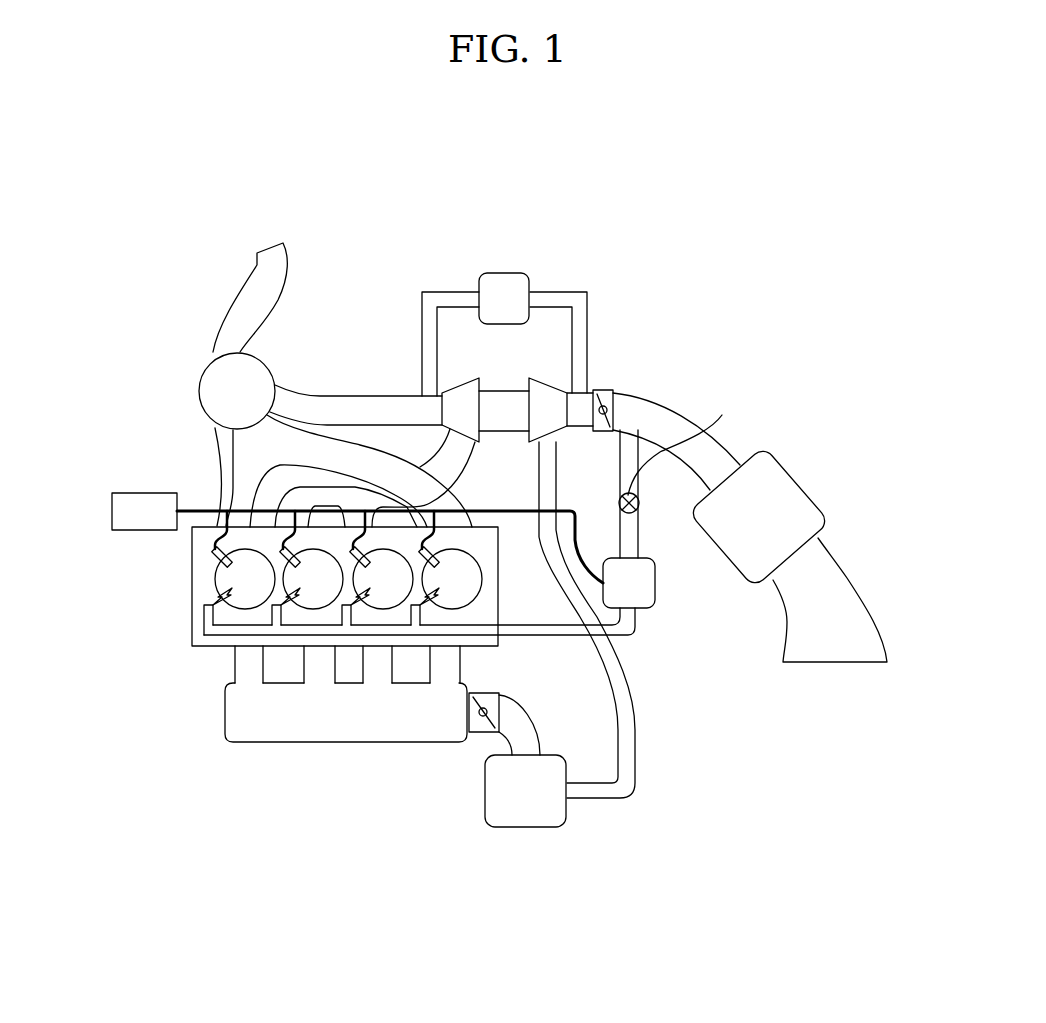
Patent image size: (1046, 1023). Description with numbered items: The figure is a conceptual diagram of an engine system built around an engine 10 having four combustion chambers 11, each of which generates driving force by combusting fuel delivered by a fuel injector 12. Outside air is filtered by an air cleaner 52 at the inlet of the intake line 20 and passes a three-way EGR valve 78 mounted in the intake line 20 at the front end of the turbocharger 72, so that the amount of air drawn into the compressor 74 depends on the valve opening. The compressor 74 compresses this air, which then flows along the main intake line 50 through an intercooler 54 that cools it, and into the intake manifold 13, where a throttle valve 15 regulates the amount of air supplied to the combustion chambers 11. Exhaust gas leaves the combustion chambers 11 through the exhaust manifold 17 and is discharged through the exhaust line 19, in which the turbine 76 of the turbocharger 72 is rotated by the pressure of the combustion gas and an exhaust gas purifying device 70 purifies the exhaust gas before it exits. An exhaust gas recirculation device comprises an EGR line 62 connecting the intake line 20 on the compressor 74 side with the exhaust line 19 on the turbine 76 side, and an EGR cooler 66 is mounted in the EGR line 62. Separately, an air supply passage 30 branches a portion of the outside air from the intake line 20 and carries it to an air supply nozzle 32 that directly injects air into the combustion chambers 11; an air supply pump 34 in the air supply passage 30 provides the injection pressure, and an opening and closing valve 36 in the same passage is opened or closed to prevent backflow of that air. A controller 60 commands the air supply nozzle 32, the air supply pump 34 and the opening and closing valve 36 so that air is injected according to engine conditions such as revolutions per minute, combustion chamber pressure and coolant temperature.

The engine 10 is at (168, 646).
The combustion chamber 11 is at (225, 582).
The fuel injector 12 is at (215, 565).
The intake manifold 13 is at (226, 707).
The throttle valve 15 is at (467, 712).
The exhaust manifold 17 is at (233, 487).
The exhaust line 19 is at (246, 290).
The intake line 20 is at (667, 413).
The air supply passage 30 is at (618, 452).
The air supply nozzle 32 is at (356, 598).
The air supply pump 34 is at (657, 590).
The opening and closing valve 36 is at (685, 441).
The main intake line 50 is at (517, 703).
The air cleaner 52 is at (808, 480).
The intercooler 54 is at (523, 827).
The controller 60 is at (125, 493).
The EGR line 62 is at (587, 315).
The EGR cooler 66 is at (503, 273).
The exhaust gas purifying device 70 is at (199, 390).
The turbocharger 72 is at (465, 347).
The compressor 74 is at (547, 382).
The turbine 76 is at (453, 393).
The 3-way EGR valve 78 is at (607, 388).